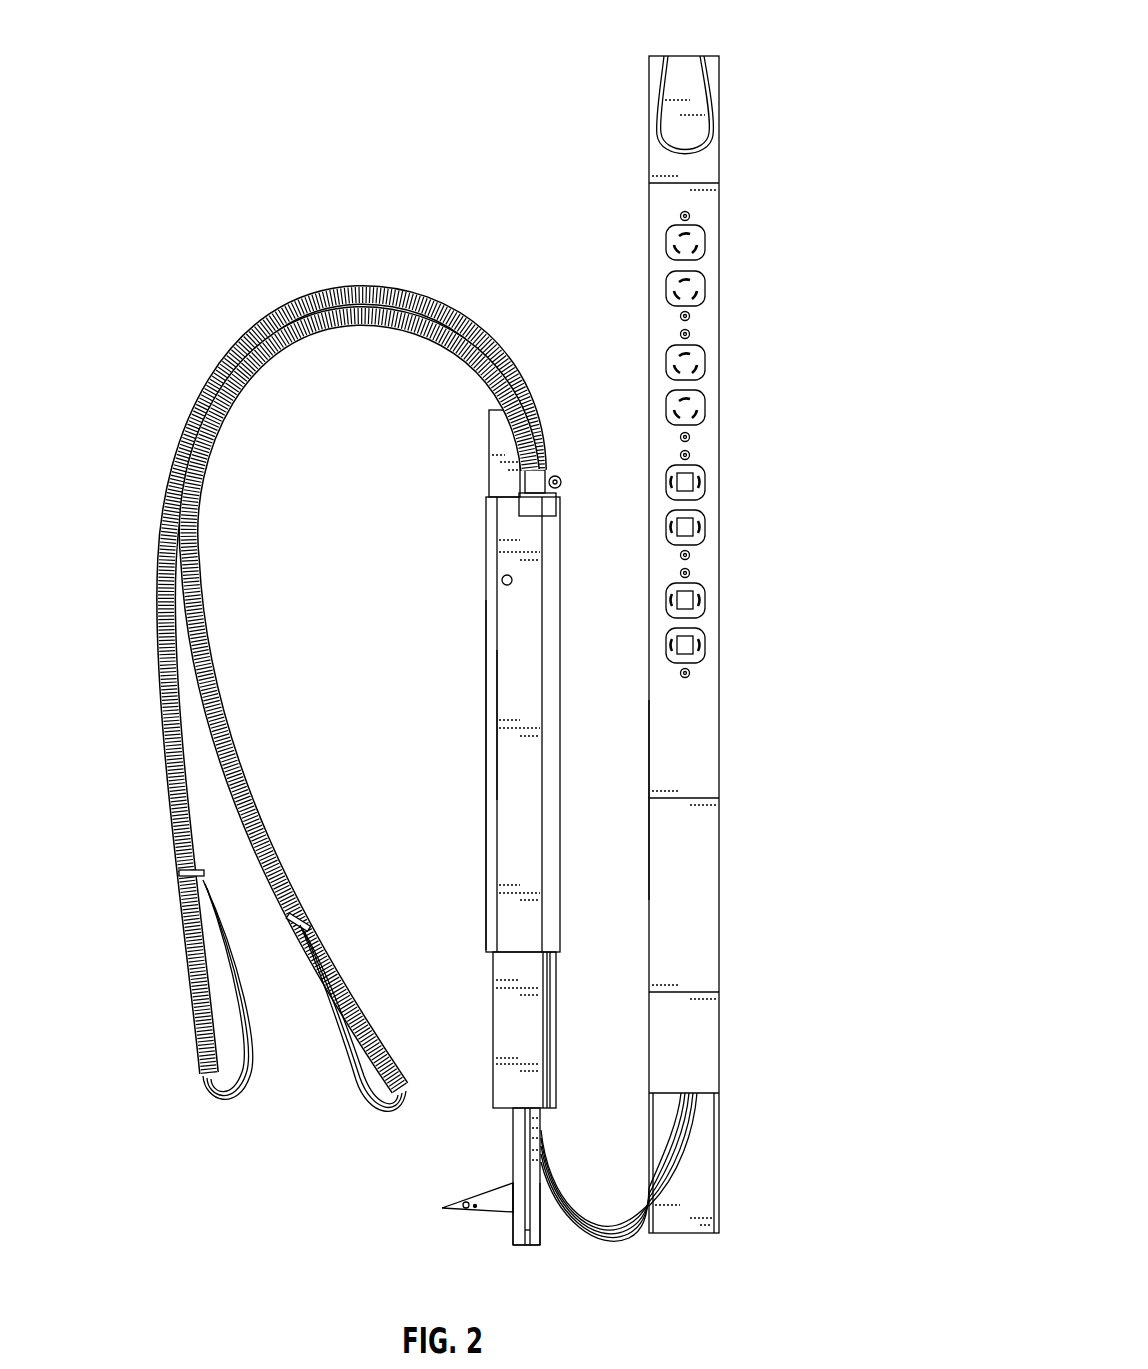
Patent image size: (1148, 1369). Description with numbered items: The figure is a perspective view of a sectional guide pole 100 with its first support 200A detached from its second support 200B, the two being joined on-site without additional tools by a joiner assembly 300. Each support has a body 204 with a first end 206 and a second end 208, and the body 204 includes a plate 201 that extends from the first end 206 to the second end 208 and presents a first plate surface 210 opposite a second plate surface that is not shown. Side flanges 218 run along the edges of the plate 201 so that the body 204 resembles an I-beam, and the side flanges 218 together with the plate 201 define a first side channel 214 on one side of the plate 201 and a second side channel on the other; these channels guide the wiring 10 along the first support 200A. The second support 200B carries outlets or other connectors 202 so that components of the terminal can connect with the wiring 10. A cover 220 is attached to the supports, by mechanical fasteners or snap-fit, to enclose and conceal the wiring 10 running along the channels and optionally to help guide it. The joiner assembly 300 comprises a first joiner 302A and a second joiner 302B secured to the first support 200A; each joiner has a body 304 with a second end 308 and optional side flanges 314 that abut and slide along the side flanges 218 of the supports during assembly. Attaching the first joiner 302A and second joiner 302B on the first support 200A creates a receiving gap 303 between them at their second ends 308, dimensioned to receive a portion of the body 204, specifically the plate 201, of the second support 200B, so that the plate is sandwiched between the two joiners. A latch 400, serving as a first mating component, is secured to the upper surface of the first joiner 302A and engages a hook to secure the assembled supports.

The wiring 10 is at (197, 738).
The sectional guide pole 100 is at (820, 12).
The first support 200A is at (498, 796).
The second support 200B is at (700, 750).
The plate 201 is at (706, 1218).
The connectors 202 is at (705, 245).
The body 204 is at (507, 690).
The first end 206 is at (497, 408).
The second end 208 is at (684, 62).
The first plate surface 210 is at (702, 1166).
The first side channel 214 is at (700, 1122).
The side flanges 218 is at (510, 1018).
The cover 220 is at (490, 518).
The joiner assembly 300 is at (437, 1278).
The first joiner 302A is at (540, 1240).
The second joiner 302B is at (513, 1212).
The receiving gap 303 is at (515, 1232).
The body 304 is at (537, 1127).
The second end 308 is at (515, 1246).
The side flanges 314 is at (517, 1118).
The latch 400 is at (440, 1208).